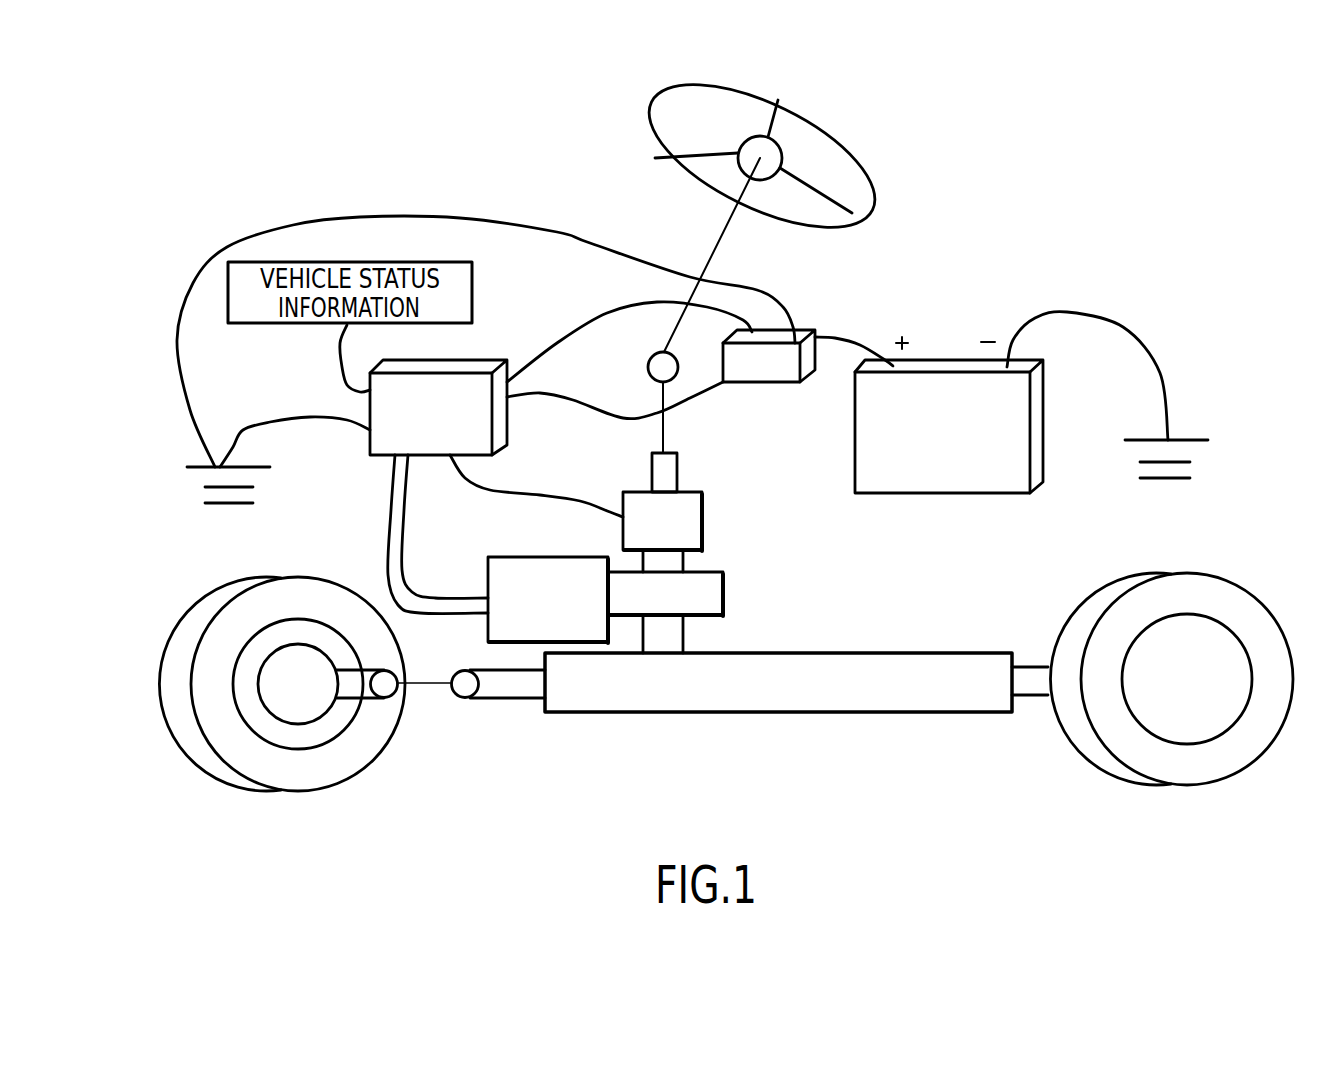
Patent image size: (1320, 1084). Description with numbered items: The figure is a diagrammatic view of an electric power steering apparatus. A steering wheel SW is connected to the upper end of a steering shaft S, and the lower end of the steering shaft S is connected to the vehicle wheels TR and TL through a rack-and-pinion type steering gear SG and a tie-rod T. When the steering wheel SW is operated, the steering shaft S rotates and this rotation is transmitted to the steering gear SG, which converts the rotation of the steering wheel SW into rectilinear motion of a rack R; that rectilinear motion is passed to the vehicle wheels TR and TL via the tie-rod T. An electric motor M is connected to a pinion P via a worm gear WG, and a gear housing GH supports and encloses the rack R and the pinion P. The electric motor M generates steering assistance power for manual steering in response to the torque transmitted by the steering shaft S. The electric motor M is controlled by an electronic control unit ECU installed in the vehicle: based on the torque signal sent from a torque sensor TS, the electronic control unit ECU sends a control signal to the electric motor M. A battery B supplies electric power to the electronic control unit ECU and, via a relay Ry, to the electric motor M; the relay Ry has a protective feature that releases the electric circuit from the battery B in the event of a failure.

The steering wheel SW is at (877, 180).
The electronic control unit ECU is at (438, 407).
The relay Ry is at (769, 356).
The battery B is at (949, 426).
The steering shaft S is at (664, 472).
The torque sensor TS is at (662, 521).
The worm gear WG is at (665, 583).
The pinion P is at (663, 634).
The electric motor M is at (548, 600).
The gear housing GH is at (758, 702).
The steering gear SG is at (625, 764).
The rack R is at (497, 687).
The tie-rod T is at (426, 712).
The vehicle wheel TR is at (198, 618).
The vehicle wheel TL is at (1250, 613).